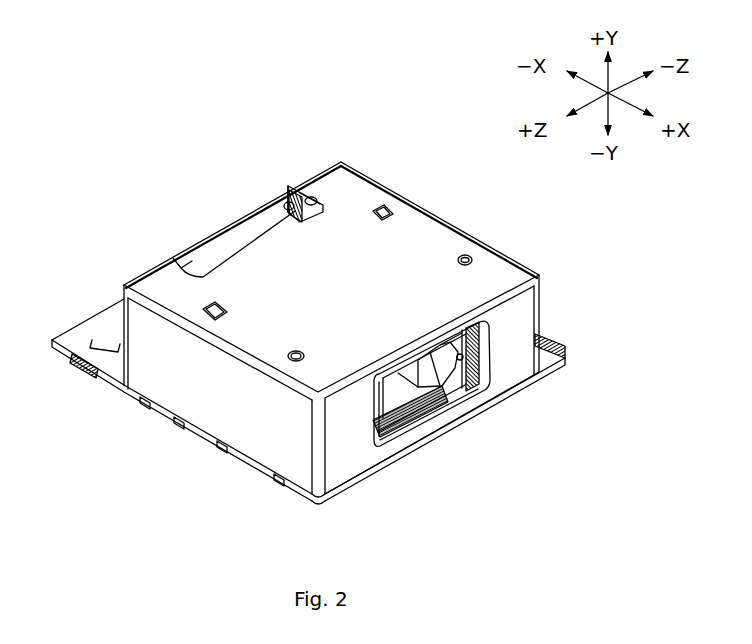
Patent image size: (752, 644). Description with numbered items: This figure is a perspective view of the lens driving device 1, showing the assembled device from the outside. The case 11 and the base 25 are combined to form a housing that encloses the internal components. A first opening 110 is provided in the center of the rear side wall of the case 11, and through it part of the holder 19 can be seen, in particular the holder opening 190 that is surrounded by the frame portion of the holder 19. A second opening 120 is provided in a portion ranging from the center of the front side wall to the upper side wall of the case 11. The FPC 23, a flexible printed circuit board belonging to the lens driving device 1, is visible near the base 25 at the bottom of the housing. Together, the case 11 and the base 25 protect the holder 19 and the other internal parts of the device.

The lens driving device 1 is at (300, 153).
The case 11 is at (392, 322).
The second opening 120 is at (204, 274).
The first opening 110 is at (484, 370).
The holder 19 is at (504, 411).
The holder opening 190 is at (482, 392).
The FPC 23 is at (115, 338).
The base 25 is at (378, 467).